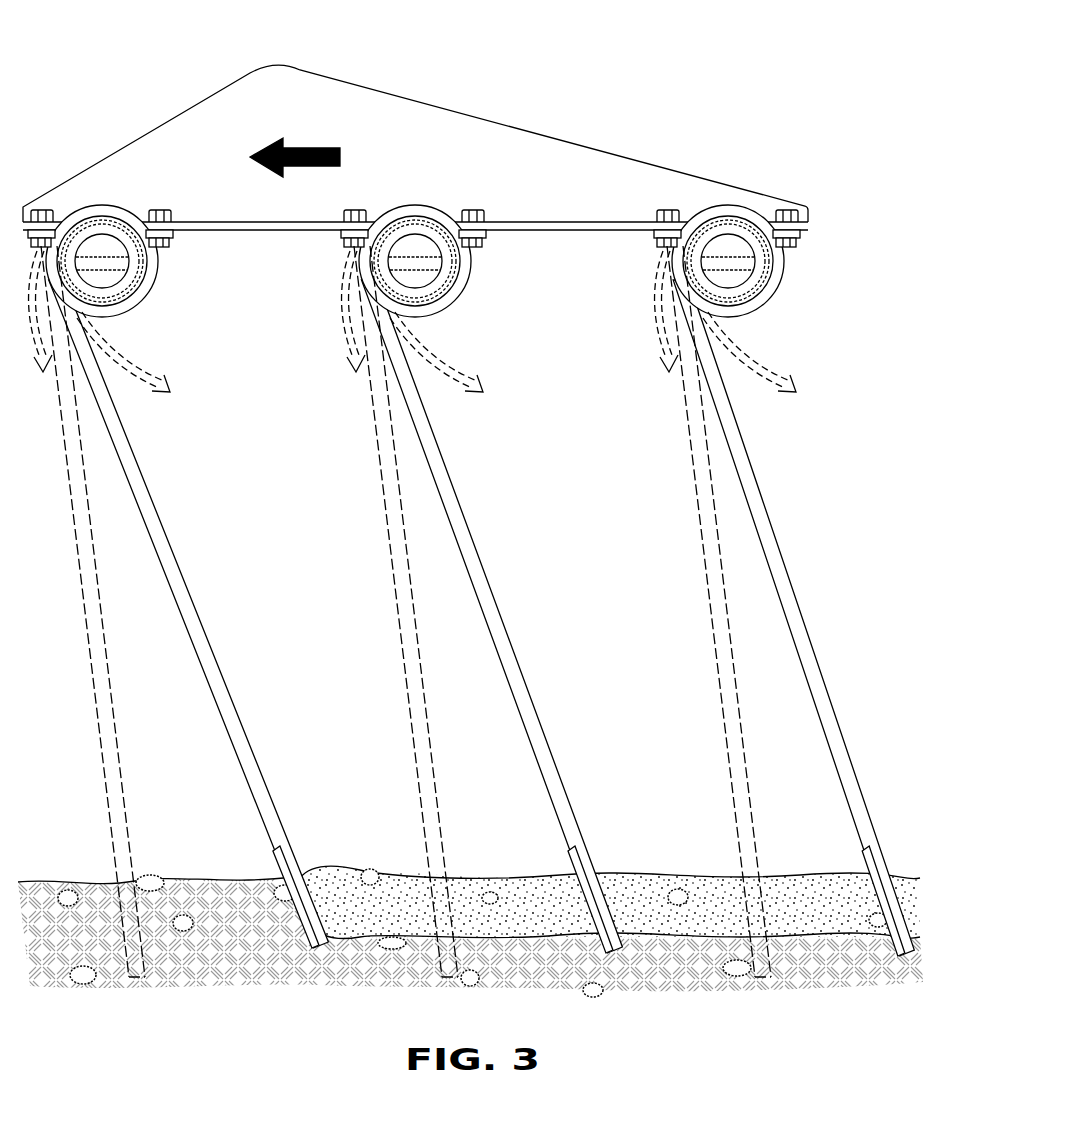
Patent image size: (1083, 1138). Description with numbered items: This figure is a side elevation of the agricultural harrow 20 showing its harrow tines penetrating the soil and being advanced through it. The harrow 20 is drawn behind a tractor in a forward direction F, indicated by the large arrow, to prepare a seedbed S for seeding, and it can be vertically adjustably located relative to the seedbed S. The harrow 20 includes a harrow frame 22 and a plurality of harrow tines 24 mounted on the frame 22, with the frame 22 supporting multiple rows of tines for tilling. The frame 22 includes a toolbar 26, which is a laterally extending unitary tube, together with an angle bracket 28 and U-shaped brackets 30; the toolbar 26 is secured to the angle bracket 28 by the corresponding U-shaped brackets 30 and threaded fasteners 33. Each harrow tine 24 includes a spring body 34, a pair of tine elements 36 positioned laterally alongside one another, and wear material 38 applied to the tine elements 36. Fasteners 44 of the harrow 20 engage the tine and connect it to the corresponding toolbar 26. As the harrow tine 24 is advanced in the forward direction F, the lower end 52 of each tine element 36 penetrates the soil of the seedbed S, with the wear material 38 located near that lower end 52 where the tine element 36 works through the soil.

The agricultural harrow 20 is at (467, 488).
The harrow frame 22 is at (565, 165).
The harrow tine 24 is at (92, 210).
The toolbar 26 is at (130, 274).
The angle bracket 28 is at (188, 137).
The U-shaped bracket 30 is at (172, 237).
The threaded fastener 33 is at (48, 208).
The spring body 34 is at (130, 303).
The tine element 36 is at (168, 567).
The wear material 38 is at (276, 870).
The fastener 44 is at (108, 260).
The lower end 52 is at (321, 984).
The seedbed S is at (418, 968).
The forward direction F is at (305, 147).